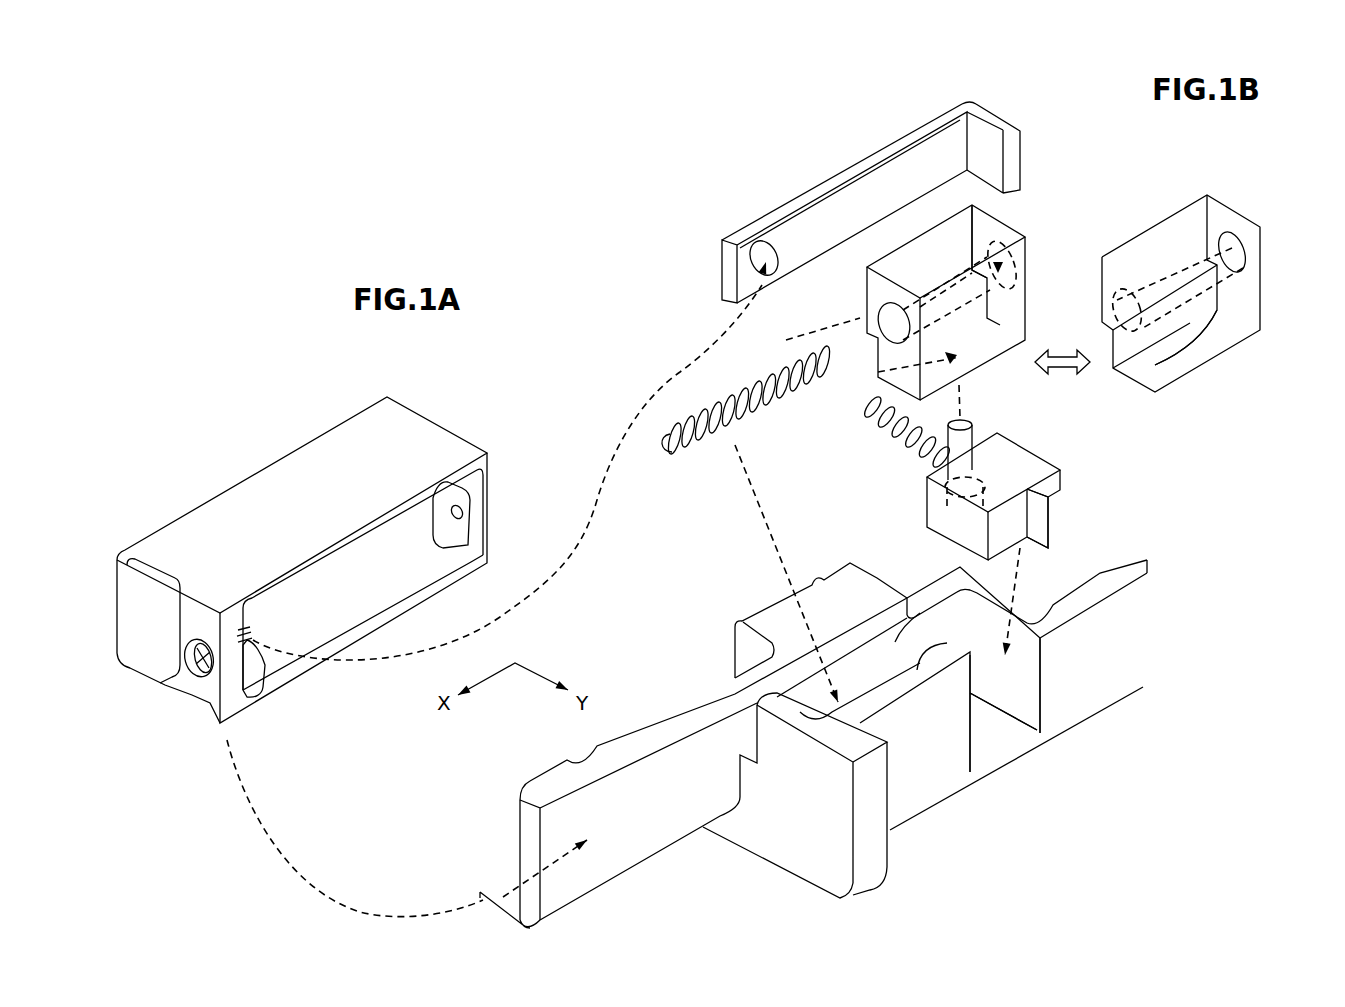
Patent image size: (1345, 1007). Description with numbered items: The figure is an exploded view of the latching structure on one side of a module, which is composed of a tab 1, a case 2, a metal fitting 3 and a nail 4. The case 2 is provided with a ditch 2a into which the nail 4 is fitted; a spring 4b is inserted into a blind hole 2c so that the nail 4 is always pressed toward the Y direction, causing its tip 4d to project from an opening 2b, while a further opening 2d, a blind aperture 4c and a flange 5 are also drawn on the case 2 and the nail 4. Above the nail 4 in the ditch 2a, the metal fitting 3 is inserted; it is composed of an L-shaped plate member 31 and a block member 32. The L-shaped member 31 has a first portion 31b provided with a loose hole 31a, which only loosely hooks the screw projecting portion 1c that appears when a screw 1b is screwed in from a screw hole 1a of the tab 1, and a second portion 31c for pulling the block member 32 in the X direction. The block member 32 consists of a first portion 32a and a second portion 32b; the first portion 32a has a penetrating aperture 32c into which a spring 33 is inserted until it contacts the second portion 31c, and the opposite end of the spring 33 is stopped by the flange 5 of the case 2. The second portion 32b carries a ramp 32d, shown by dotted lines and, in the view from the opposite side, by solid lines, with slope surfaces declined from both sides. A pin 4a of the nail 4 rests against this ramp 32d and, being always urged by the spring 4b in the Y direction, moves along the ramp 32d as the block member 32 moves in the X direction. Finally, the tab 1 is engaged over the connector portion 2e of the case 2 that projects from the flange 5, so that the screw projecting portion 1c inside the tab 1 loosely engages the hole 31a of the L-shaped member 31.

In FIG. 1A, the tab 1 is at (382, 400).
In FIG. 1A, the screw hole 1a is at (210, 682).
In FIG. 1A, the screw 1b is at (200, 677).
In FIG. 1A, the screw projecting portion 1c is at (263, 690).
In FIG. 1A, the case 2 is at (831, 744).
In FIG. 1A, the ditch 2a is at (932, 562).
In FIG. 1A, the opening 2b is at (1003, 737).
In FIG. 1A, the blind hole 2c is at (945, 643).
In FIG. 1A, the opening 2d is at (735, 672).
In FIG. 1A, the connector portion 2e is at (617, 843).
In FIG. 1A, the flange 5 is at (868, 877).
In FIG. 1B, the metal fitting 3 is at (752, 268).
In FIG. 1B, the L-shaped plate member 31 is at (740, 208).
In FIG. 1B, the hole 31a is at (799, 289).
In FIG. 1B, the first portion 31b is at (873, 150).
In FIG. 1B, the second portion 31c is at (1000, 122).
In FIG. 1B, the block member 32 is at (1074, 281).
In FIG. 1B, the first portion 32a is at (1225, 205).
In FIG. 1B, the second portion 32b is at (1252, 310).
In FIG. 1B, the penetrating aperture 32c is at (1195, 250).
In FIG. 1B, the ramp 32d is at (1108, 295).
In FIG. 1B, the spring 33 is at (697, 463).
In FIG. 1B, the nail 4 is at (1050, 479).
In FIG. 1B, the pin 4a is at (950, 487).
In FIG. 1B, the spring 4b is at (876, 438).
In FIG. 1B, the blind aperture 4c is at (1040, 495).
In FIG. 1B, the tip 4d is at (1050, 535).